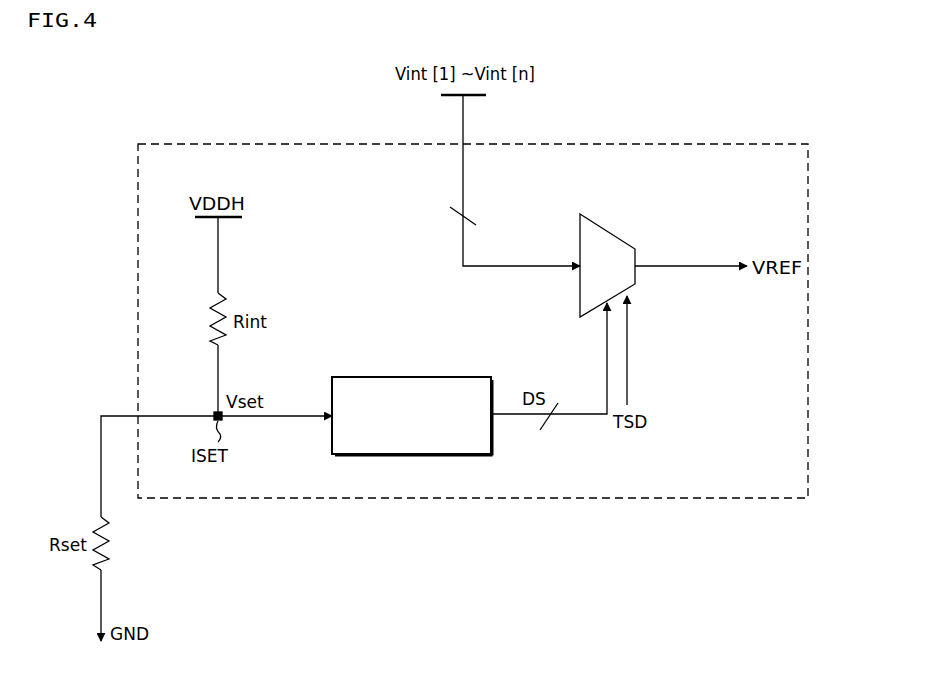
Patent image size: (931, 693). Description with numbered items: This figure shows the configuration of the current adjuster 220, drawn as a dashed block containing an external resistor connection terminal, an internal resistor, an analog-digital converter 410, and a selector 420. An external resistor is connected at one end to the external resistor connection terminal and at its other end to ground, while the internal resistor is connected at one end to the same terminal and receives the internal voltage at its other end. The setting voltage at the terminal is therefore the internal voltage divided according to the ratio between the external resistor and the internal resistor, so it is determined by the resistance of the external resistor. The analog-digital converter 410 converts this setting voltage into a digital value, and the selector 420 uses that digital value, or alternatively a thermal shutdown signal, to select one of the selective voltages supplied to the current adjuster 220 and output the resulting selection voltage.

The current adjuster 220 is at (650, 144).
The analog-digital converter 410 is at (410, 377).
The selector 420 is at (610, 230).